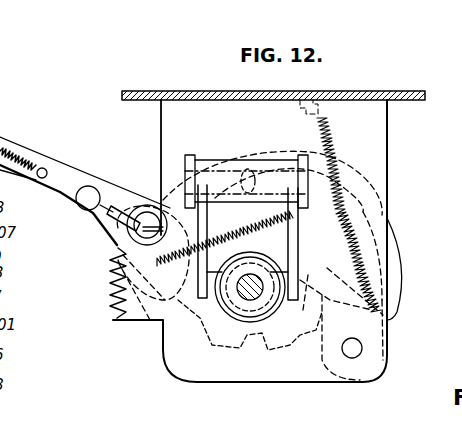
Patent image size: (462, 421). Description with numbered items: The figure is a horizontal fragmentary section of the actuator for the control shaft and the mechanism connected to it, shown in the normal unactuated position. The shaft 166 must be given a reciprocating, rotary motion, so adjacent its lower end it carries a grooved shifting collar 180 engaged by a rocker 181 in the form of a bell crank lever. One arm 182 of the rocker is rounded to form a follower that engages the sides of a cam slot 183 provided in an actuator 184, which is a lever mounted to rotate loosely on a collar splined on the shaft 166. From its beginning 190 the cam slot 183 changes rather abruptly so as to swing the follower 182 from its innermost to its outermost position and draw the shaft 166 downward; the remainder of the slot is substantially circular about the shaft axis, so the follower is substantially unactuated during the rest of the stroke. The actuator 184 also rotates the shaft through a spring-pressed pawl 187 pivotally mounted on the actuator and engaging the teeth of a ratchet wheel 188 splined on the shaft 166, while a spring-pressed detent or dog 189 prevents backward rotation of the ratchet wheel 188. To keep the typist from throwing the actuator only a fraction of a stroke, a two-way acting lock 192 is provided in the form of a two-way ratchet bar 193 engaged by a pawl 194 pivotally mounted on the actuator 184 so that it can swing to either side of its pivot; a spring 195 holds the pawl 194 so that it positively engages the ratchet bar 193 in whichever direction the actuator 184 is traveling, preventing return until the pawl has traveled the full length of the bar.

The shaft 166 is at (240, 298).
The grooved shifting collar 180 is at (262, 305).
The rocker 181 is at (207, 168).
The arm 182 is at (249, 170).
The cam slot 183 is at (289, 157).
The actuator 184 is at (142, 185).
The spring-pressed pawl 187 is at (118, 242).
The ratchet wheel 188 is at (236, 347).
The spring-pressed detent or dog 189 is at (386, 318).
The beginning of the cam slot 190 is at (242, 172).
The two-way acting lock 192 is at (63, 177).
The two-way ratchet bar 193 is at (118, 312).
The pawl 194 is at (111, 198).
The spring 195 is at (2, 147).